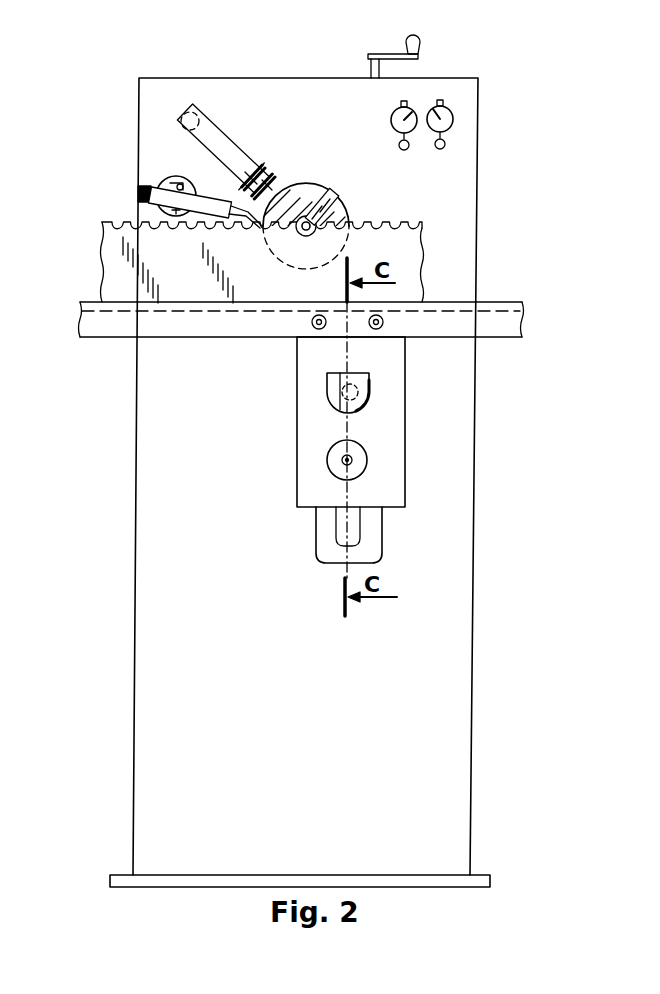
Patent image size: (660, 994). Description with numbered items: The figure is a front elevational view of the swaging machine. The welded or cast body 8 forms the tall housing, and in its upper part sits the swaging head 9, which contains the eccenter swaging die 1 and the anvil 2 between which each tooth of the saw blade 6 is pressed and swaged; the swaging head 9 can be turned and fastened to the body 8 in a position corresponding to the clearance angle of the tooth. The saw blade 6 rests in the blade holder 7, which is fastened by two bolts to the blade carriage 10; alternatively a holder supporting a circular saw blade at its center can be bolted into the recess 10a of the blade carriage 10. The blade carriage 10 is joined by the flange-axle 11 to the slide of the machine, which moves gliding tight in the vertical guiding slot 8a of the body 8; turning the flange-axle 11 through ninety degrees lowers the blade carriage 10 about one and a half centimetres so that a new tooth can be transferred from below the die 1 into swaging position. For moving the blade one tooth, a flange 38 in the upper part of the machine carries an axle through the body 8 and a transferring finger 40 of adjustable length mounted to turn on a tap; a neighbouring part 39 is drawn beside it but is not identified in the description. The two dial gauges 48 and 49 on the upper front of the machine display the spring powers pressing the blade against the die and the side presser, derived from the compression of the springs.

The swaging die 1 is at (313, 217).
The anvil 2 is at (328, 192).
The saw blade 6 is at (414, 254).
The blade holder 7 is at (528, 323).
The body of the machine 8 is at (242, 539).
The vertical guiding slot 8a is at (350, 533).
The swaging head 9 is at (305, 197).
The blade carriage 10 is at (377, 422).
The recess 10a is at (355, 465).
The flange-axle 11 is at (372, 396).
The flange 38 is at (160, 208).
The feed roller 39 is at (170, 180).
The transferring finger 40 is at (150, 193).
The dial gauge 48 is at (447, 110).
The dial gauge 49 is at (410, 114).